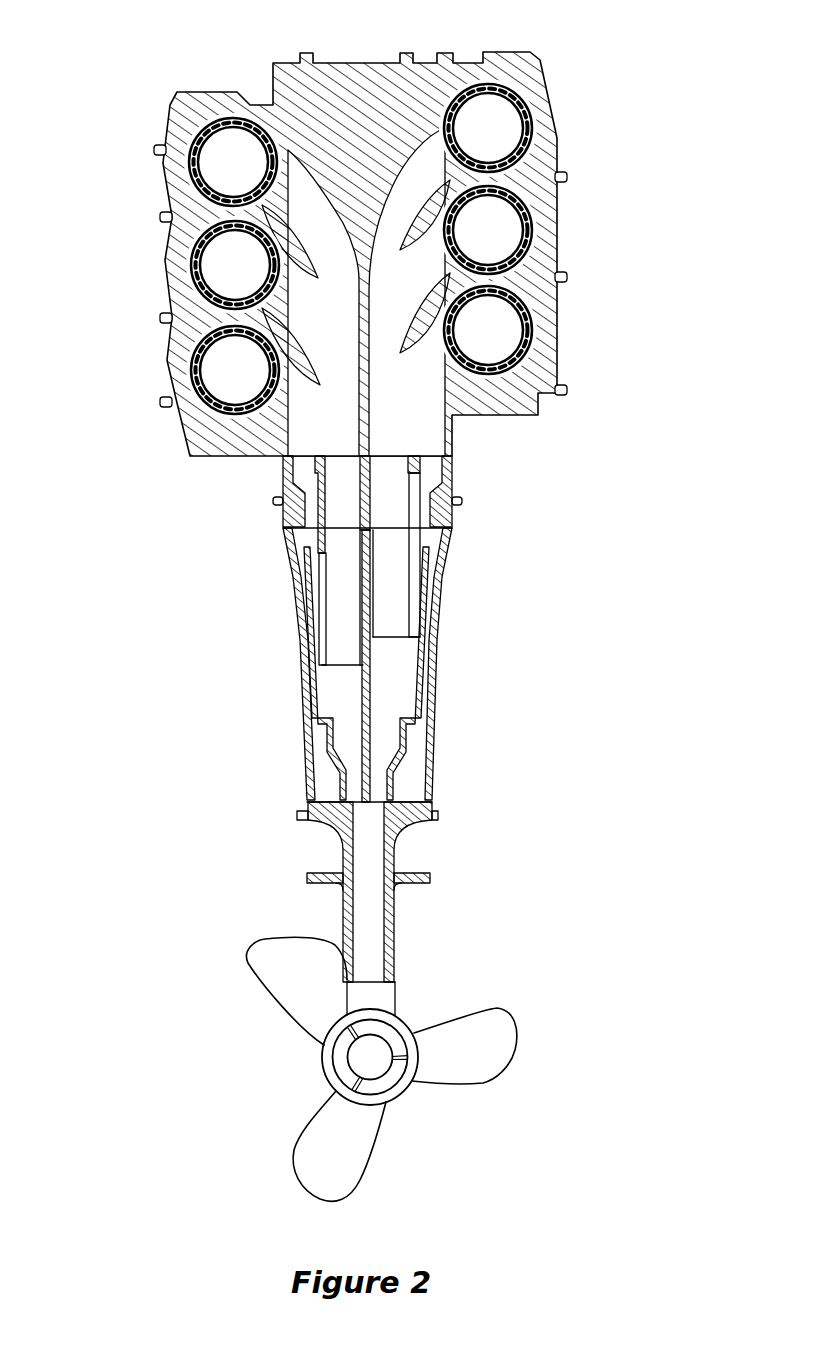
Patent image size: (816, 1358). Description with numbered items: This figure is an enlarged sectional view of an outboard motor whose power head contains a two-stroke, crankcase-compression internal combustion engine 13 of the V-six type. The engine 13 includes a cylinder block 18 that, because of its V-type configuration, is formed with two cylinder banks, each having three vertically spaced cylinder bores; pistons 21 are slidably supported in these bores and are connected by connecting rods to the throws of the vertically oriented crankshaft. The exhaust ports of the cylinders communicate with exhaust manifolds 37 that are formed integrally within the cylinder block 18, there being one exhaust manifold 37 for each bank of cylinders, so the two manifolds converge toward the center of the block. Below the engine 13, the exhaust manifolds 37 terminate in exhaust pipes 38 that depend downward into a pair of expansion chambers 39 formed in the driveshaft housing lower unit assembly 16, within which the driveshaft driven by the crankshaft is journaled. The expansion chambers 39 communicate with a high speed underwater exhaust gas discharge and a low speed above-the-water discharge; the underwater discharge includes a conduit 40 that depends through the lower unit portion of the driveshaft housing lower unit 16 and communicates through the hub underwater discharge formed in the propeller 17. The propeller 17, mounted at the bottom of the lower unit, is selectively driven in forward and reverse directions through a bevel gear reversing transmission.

The internal combustion engine 13 is at (574, 152).
The driveshaft housing lower unit assembly 16 is at (437, 633).
The propeller 17 is at (463, 1013).
The cylinder block 18 is at (156, 247).
The pistons 21 is at (205, 172).
The exhaust manifolds 37 is at (297, 170).
The exhaust pipes 38 is at (418, 587).
The expansion chambers 39 is at (350, 738).
The conduit 40 is at (370, 913).